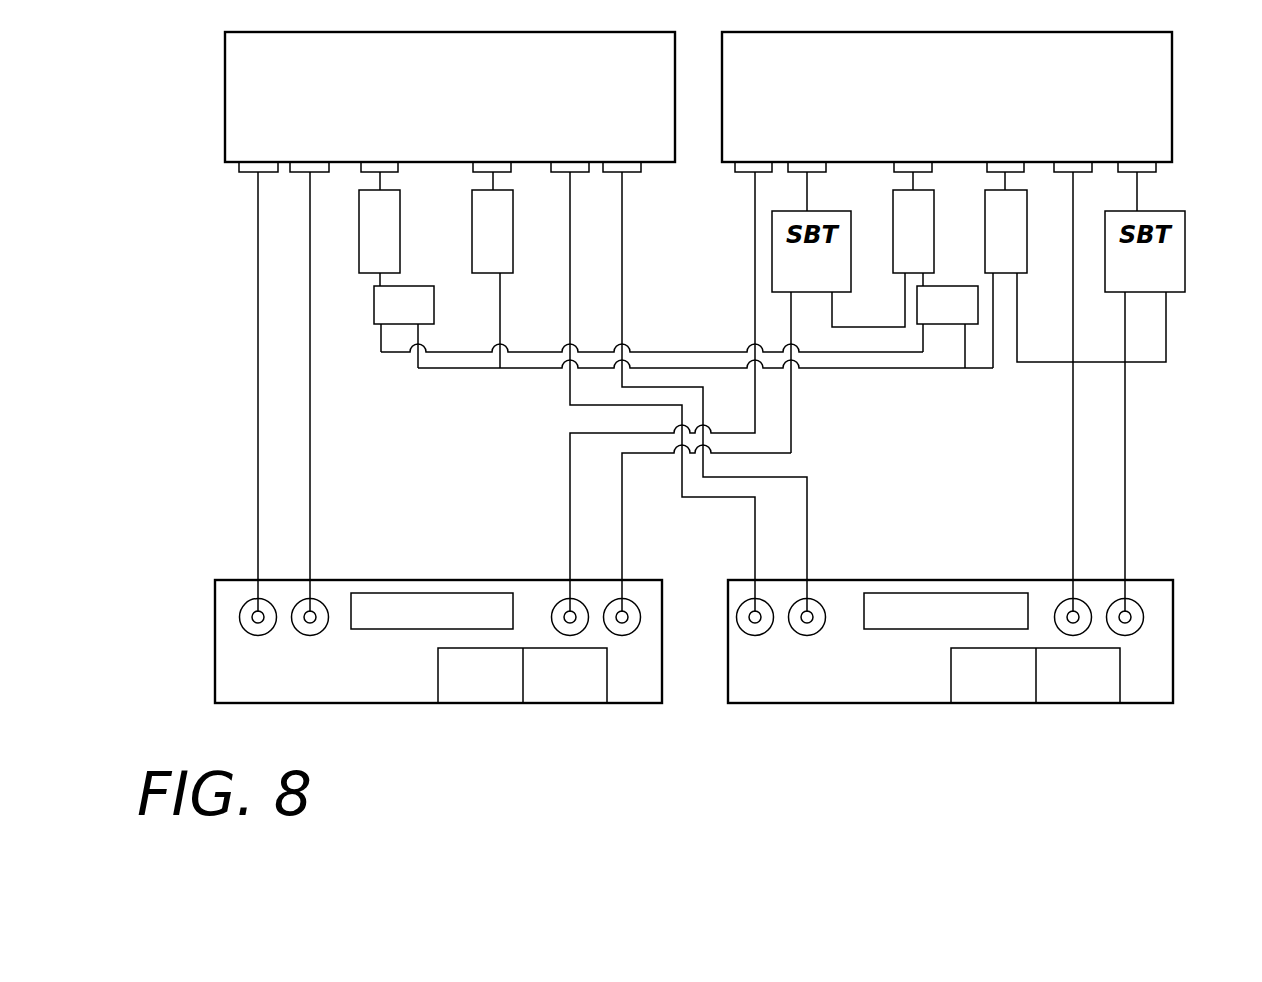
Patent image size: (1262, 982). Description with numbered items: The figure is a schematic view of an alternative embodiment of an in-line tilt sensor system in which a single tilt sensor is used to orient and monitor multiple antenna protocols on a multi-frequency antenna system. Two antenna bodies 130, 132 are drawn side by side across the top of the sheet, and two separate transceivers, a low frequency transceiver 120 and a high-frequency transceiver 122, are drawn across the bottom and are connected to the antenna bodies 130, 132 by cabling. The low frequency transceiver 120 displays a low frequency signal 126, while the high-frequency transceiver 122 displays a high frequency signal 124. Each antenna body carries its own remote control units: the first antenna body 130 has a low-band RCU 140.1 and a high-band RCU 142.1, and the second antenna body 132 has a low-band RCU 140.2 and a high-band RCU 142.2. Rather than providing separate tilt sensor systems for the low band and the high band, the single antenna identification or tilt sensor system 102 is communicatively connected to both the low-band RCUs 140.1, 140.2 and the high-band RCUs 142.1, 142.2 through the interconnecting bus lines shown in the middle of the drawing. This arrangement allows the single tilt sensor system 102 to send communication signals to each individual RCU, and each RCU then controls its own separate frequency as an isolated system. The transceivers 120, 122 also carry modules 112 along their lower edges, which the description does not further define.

The antenna body 130 is at (450, 102).
The antenna body 132 is at (947, 102).
The low-band RCU 140.1 is at (358, 190).
The high-band RCU 142.1 is at (472, 190).
The low-band RCU 140.2 is at (934, 190).
The high-band RCU 142.2 is at (1027, 190).
The antenna identification system 102 is at (375, 326).
The low frequency transceiver 120 is at (438, 641).
The high-frequency transceiver 122 is at (950, 641).
The low frequency signal 126 is at (459, 610).
The high frequency signal 124 is at (972, 610).
The module 112 is at (548, 687).